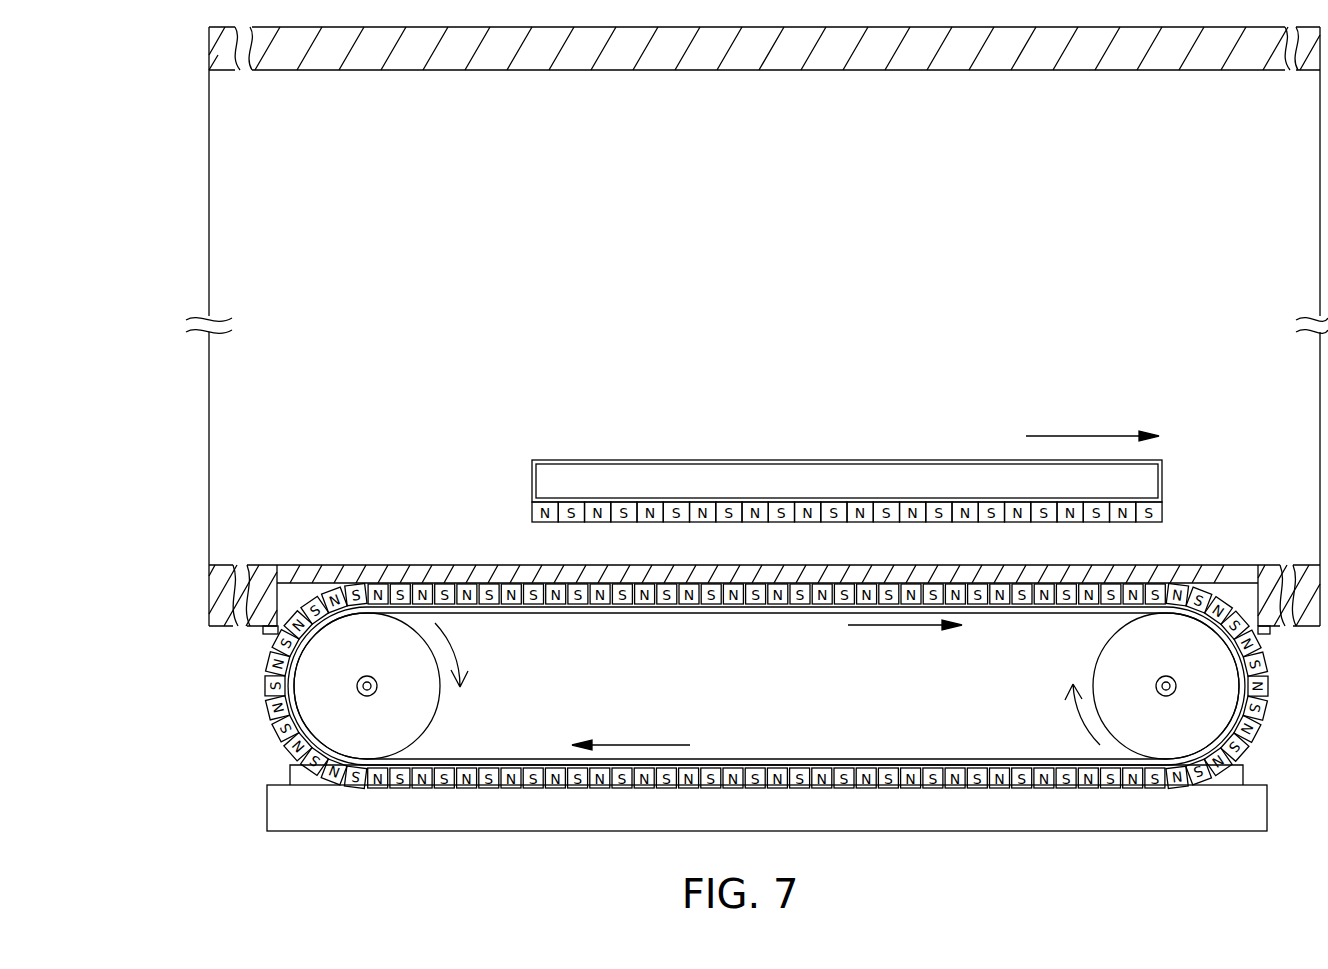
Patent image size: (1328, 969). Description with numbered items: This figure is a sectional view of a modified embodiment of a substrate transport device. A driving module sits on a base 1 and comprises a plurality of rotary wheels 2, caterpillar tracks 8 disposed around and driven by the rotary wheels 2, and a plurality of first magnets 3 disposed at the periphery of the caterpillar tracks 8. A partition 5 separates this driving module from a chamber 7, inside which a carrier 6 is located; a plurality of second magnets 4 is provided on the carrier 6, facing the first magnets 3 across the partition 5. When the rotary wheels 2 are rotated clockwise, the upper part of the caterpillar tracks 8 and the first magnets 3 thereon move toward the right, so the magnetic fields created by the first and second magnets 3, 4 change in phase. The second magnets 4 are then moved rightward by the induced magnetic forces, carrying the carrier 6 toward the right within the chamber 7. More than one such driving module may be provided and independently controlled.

The base 1 is at (283, 804).
The rotary wheels 2 is at (320, 722).
The first magnets 3 is at (268, 683).
The second magnets 4 is at (537, 513).
The partitions 5 is at (288, 580).
The carrier 6 is at (822, 485).
The chamber 7 is at (254, 137).
The caterpillar tracks 8 is at (445, 760).